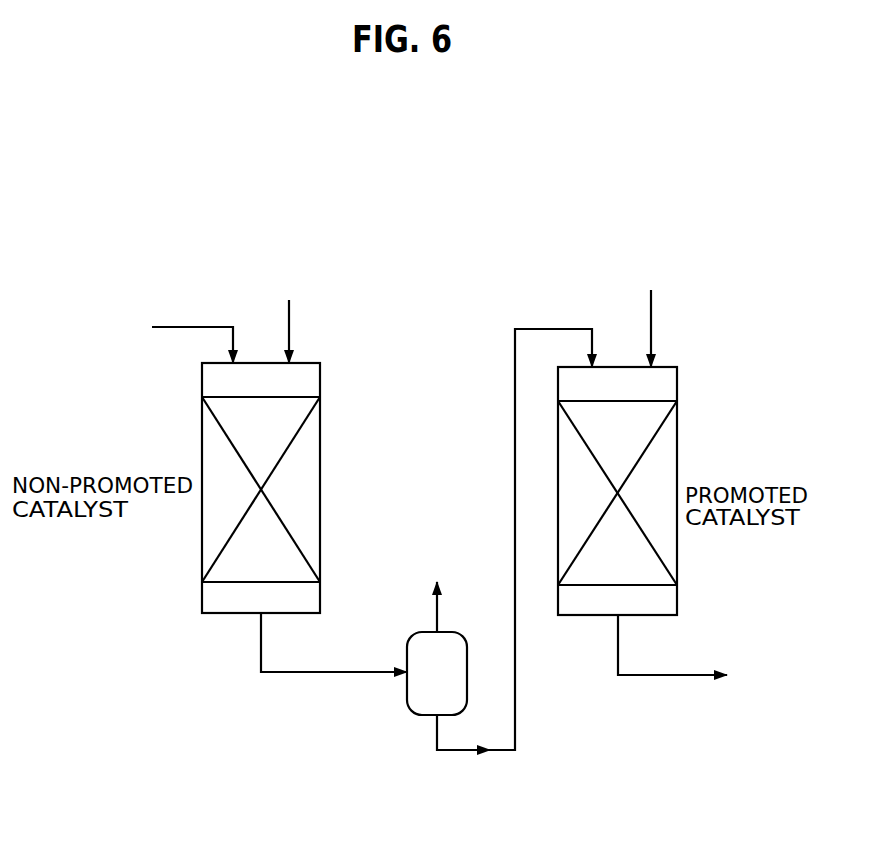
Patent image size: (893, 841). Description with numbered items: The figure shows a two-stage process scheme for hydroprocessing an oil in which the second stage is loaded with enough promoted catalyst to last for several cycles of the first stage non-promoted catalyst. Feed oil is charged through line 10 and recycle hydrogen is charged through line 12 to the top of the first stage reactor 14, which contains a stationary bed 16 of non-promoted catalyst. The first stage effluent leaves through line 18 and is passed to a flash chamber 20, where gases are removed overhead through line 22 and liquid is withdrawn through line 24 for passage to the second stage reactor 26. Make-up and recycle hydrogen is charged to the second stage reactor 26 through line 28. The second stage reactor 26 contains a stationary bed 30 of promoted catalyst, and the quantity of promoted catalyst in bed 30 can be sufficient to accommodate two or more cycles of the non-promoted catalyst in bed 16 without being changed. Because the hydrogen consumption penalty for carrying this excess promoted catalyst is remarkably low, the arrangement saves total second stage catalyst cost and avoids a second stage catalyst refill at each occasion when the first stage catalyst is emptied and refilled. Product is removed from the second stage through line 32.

The feed oil line 10 is at (220, 327).
The recycle hydrogen line 12 is at (290, 330).
The first stage reactor 14 is at (322, 384).
The stationary bed of non-promoted catalyst 16 is at (277, 436).
The first stage effluent line 18 is at (322, 673).
The flash chamber 20 is at (467, 675).
The gas removal line 22 is at (438, 613).
The liquid line 24 is at (517, 722).
The second stage reactor 26 is at (679, 388).
The make-up and recycle hydrogen line 28 is at (652, 332).
The stationary bed of promoted catalyst 30 is at (631, 439).
The product line 32 is at (677, 677).